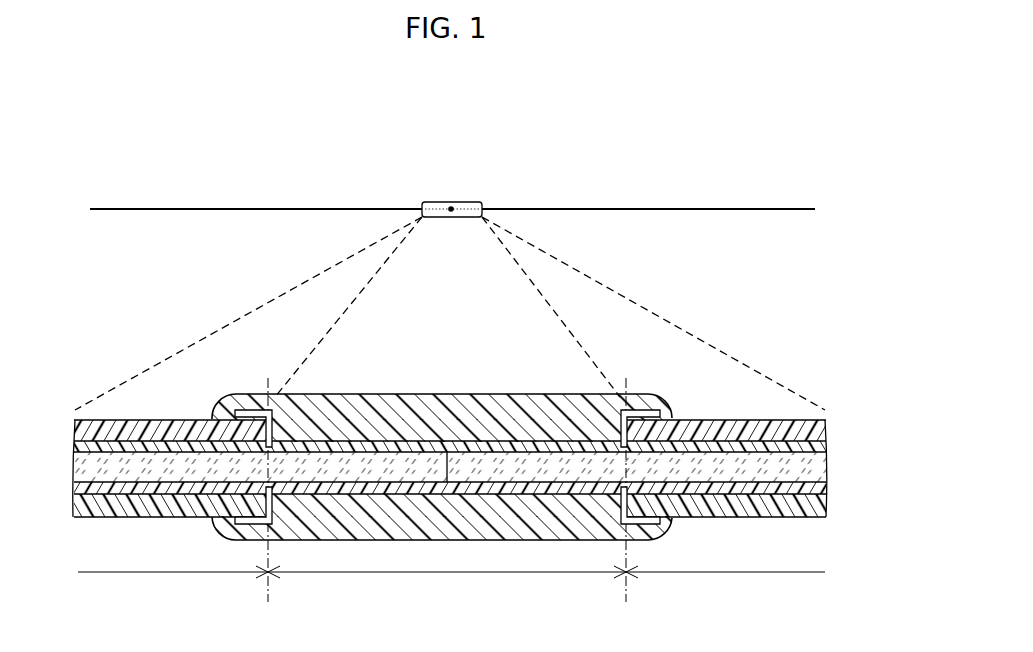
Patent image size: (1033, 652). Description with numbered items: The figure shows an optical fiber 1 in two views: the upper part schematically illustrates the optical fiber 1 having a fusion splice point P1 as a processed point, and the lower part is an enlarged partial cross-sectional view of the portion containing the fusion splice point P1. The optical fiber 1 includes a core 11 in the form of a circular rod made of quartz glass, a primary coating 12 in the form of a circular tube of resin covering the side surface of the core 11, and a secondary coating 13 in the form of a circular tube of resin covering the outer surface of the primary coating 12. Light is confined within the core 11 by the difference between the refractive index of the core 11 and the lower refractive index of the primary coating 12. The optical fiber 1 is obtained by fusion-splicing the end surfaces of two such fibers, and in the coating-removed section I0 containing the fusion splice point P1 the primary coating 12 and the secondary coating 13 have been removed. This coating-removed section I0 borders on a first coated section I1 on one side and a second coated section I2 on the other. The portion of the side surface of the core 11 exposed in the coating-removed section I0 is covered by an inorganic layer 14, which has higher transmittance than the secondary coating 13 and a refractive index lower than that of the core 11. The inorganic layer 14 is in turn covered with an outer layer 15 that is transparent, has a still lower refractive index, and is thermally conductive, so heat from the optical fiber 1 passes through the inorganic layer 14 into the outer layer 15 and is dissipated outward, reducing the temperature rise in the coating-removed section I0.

The optical fiber 1 is at (773, 132).
The core 11 is at (536, 455).
The primary coating 12 is at (88, 446).
The secondary coating 13 is at (88, 433).
The inorganic layer 14 is at (355, 446).
The outer layer 15 is at (400, 393).
The fusion splice point P1 is at (452, 218).
The coating-removed section I0 is at (438, 201).
The first coated section I1 is at (348, 207).
The second coated section I2 is at (547, 207).